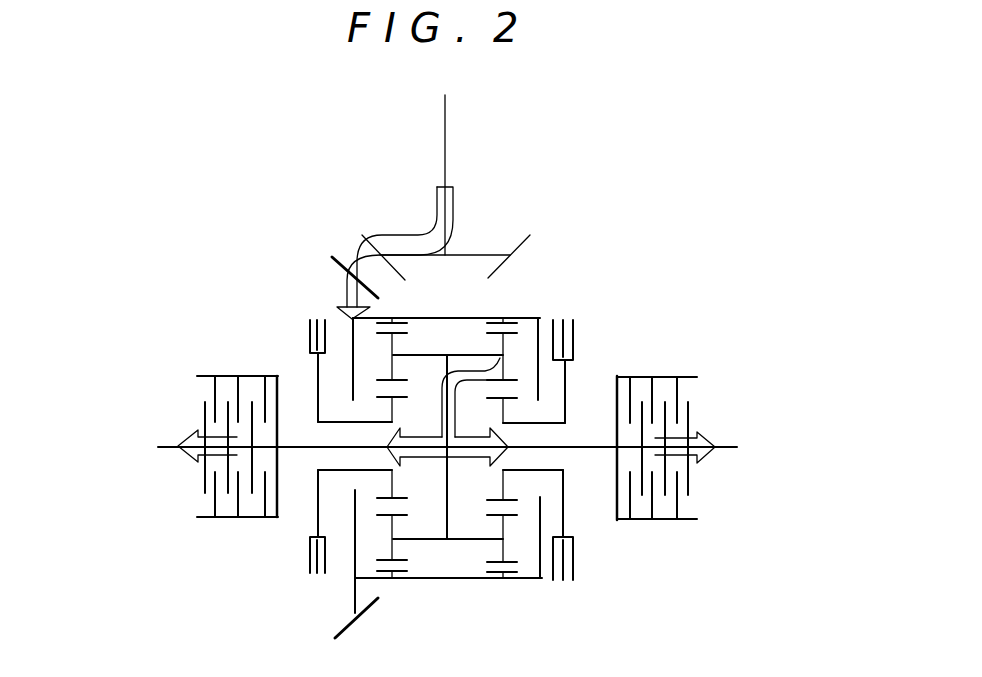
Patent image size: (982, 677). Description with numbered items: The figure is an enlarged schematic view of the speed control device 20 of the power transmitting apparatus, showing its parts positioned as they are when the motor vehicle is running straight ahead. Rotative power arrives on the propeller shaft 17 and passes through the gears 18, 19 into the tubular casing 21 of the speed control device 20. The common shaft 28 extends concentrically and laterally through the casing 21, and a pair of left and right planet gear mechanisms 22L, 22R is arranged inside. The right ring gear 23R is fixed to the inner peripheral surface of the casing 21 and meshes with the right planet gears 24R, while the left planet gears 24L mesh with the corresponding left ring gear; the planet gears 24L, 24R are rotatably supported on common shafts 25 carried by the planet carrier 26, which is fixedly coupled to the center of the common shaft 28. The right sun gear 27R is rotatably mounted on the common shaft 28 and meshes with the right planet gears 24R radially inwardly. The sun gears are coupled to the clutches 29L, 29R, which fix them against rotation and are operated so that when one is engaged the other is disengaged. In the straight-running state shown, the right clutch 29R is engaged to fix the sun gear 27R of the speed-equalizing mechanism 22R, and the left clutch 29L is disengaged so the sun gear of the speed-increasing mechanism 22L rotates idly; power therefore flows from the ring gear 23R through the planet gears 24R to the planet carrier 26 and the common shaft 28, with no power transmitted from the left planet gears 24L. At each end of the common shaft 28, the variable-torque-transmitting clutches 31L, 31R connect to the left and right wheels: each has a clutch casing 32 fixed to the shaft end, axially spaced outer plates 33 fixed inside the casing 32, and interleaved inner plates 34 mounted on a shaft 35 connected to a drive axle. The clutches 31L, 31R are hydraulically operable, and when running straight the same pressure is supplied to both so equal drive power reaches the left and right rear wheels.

The propeller shaft 17 is at (446, 121).
The gear 18 is at (530, 235).
The gear 19 is at (342, 257).
The speed control device 20 is at (608, 315).
The casing 21 is at (435, 580).
The left planet gear mechanism 22L is at (377, 537).
The right planet gear mechanism 22R is at (520, 345).
The right ring gear 23R is at (513, 318).
The left planet gears 24L is at (393, 552).
The right planet gears 24R is at (517, 555).
The common shafts 25 is at (437, 318).
The planet carrier 26 is at (448, 507).
The right sun gear 27R is at (447, 412).
The common shaft 28 is at (592, 446).
The left clutch 29L is at (310, 563).
The right clutch 29R is at (573, 570).
The left variable-torque-transmitting clutch 31L is at (156, 442).
The right variable-torque-transmitting clutch 31R is at (665, 377).
The clutch casing 32 is at (228, 518).
The outer plates 33 is at (247, 390).
The inner plates 34 is at (203, 478).
The shaft 35 is at (163, 437).